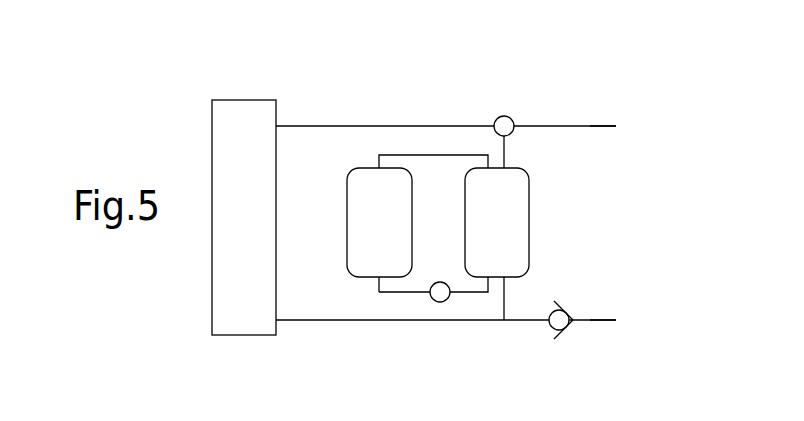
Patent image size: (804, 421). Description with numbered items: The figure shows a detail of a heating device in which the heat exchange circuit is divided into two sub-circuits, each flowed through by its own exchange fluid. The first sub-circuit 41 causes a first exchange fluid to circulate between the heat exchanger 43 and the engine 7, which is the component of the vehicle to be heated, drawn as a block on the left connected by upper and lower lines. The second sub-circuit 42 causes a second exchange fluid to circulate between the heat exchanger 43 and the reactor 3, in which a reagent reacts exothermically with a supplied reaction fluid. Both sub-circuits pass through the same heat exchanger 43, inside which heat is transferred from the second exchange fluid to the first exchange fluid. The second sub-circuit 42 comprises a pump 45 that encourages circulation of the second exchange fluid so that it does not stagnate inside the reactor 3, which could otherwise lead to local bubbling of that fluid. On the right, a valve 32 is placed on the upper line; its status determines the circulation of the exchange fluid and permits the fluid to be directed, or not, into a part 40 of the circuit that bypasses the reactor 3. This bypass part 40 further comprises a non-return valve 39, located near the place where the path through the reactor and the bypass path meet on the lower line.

The component of the vehicle to be heated 7 is at (247, 115).
The first sub-circuit 41 is at (371, 126).
The valve 32 is at (504, 126).
The part of the circuit bypassing the reactor 40 is at (596, 126).
The second sub-circuit 42 is at (457, 155).
The reactor 3 is at (355, 217).
The heat exchanger 43 is at (521, 252).
The pump 45 is at (440, 302).
The non-return valve 39 is at (567, 330).